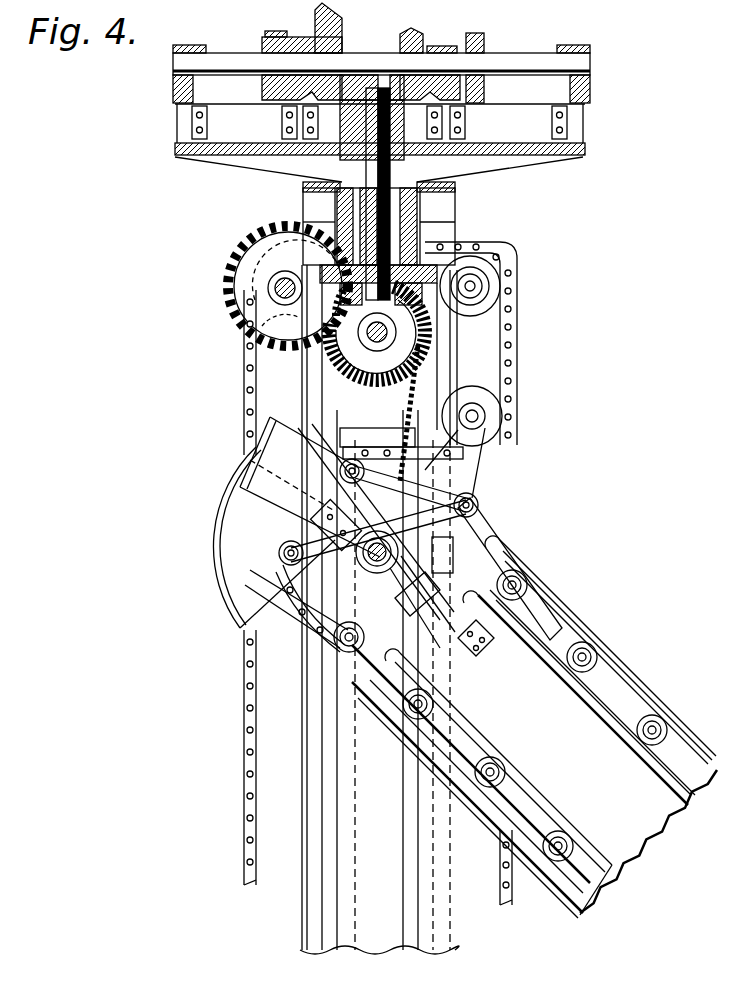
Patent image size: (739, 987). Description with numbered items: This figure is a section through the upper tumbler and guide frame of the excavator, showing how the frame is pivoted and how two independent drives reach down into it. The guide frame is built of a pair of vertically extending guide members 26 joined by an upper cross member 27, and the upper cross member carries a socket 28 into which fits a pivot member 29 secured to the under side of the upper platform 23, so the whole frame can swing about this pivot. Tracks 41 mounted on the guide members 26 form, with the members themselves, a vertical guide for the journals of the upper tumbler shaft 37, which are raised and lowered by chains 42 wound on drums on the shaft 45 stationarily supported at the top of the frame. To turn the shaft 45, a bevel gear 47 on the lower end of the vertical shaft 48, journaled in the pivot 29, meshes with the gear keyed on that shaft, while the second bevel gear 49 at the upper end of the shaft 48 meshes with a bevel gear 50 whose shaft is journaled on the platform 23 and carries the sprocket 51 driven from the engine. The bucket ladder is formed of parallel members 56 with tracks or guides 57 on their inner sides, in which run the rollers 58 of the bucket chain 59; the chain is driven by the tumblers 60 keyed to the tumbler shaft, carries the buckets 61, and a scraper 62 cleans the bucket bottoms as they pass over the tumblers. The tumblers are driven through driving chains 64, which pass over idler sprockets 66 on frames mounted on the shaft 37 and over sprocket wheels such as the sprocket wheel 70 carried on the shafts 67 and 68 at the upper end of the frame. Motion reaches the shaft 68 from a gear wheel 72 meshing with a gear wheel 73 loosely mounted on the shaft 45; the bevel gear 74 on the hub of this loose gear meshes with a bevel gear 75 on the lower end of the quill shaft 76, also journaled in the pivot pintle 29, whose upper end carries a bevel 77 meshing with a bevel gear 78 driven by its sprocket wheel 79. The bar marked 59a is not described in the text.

The upper platform 23 is at (545, 137).
The vertically extending guide members 26 is at (306, 856).
The upper cross member 27 is at (303, 187).
The socket 28 is at (452, 216).
The pivot member 29 is at (420, 180).
The upper tumbler shaft 37 is at (377, 562).
The tracks 41 is at (410, 846).
The chains 42 is at (408, 406).
The shaft 45 is at (377, 333).
The bevel gear 47 is at (428, 330).
The vertical shaft 48 is at (340, 202).
The second bevel gear 49 is at (364, 90).
The bevel gear 50 is at (418, 46).
The sprocket 51 is at (478, 46).
The parallel members 56 is at (522, 664).
The tracks or guides 57 is at (540, 612).
The rollers 58 is at (360, 386).
The bucket chain 59 is at (600, 680).
The bar 59a is at (520, 66).
The tumblers 60 is at (462, 520).
The buckets 61 is at (230, 513).
The scraper 62 is at (258, 470).
The driving chains 64 is at (516, 372).
The idler sprockets 66 is at (498, 294).
The shaft 67 is at (477, 284).
The shaft 68 is at (276, 294).
The sprocket wheel 70 is at (262, 282).
The gear wheel 72 is at (270, 332).
The gear wheel 73 is at (333, 345).
The bevel gear 74 is at (372, 388).
The bevel gear 75 is at (322, 262).
The quill shaft 76 is at (458, 146).
The bevel 77 is at (443, 128).
The bevel gear 78 is at (336, 16).
The sprocket wheel 79 is at (278, 20).